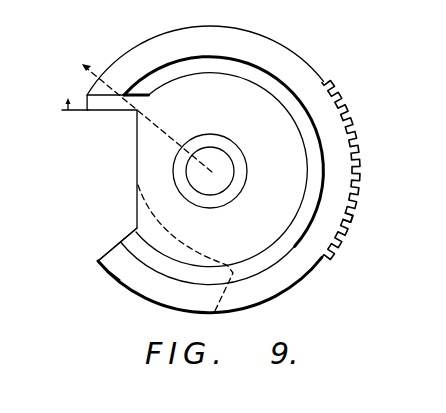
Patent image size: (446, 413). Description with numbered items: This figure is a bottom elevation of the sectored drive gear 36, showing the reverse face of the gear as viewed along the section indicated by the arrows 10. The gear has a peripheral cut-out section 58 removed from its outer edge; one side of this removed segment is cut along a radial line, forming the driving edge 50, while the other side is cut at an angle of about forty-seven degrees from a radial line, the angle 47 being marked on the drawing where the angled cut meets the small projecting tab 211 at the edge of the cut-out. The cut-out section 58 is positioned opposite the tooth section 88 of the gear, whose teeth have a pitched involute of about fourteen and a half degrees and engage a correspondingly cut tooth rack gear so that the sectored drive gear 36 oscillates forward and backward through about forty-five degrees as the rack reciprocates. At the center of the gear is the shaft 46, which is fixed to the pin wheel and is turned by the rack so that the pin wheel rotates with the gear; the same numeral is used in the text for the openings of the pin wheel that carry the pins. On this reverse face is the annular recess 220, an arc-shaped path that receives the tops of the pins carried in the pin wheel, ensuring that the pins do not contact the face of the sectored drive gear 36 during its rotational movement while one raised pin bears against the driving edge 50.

The section line indicator 10 is at (78, 23).
The sectored drive gear 36 is at (268, 58).
The shaft 46 is at (218, 183).
The angle of 47 degrees 47 is at (131, 118).
The driving edge 50 is at (126, 236).
The peripheral cut-out section 58 is at (128, 163).
The tooth section 88 is at (352, 213).
The projecting tab 211 is at (108, 108).
The annular recess 220 is at (312, 128).